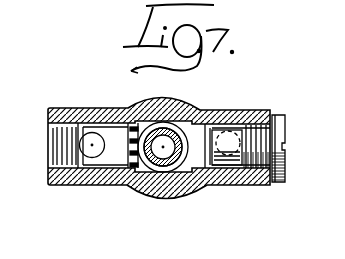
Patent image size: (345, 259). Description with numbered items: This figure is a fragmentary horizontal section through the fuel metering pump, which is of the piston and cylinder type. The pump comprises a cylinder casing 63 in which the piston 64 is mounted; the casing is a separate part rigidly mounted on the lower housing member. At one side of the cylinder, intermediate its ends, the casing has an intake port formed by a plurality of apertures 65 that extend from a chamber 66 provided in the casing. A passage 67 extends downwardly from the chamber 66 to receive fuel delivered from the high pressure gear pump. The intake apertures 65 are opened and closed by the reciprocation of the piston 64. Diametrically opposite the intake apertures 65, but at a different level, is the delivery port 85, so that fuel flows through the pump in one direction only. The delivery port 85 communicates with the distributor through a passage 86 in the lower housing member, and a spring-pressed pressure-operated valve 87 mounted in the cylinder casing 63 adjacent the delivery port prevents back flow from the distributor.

The cylinder casing 63 is at (153, 186).
The piston 64 is at (173, 166).
The apertures 65 is at (131, 138).
The chamber 66 is at (113, 163).
The passage 67 is at (93, 132).
The delivery port 85 is at (200, 137).
The passage 86 is at (243, 113).
The spring-pressed pressure-operated valve 87 is at (204, 160).